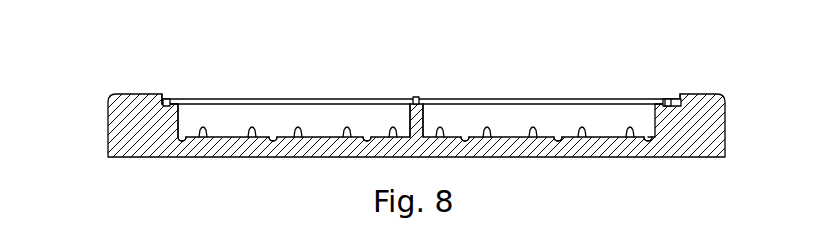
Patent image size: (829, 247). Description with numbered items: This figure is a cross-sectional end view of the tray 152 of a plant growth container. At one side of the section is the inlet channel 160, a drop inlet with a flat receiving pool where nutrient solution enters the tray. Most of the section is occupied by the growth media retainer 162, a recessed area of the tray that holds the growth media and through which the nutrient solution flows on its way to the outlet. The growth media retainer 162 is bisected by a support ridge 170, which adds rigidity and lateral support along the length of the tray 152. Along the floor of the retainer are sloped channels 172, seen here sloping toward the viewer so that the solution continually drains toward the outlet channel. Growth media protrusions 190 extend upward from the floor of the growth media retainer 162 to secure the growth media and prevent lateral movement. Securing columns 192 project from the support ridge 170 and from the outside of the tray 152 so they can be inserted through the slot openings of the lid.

The tray 152 is at (726, 128).
The inlet channel 160 is at (176, 106).
The growth media retainer 162 is at (215, 94).
The support ridge 170 is at (424, 113).
The sloped channels 172 is at (180, 142).
The growth media protrusions 190 is at (540, 129).
The securing columns 192 is at (176, 94).